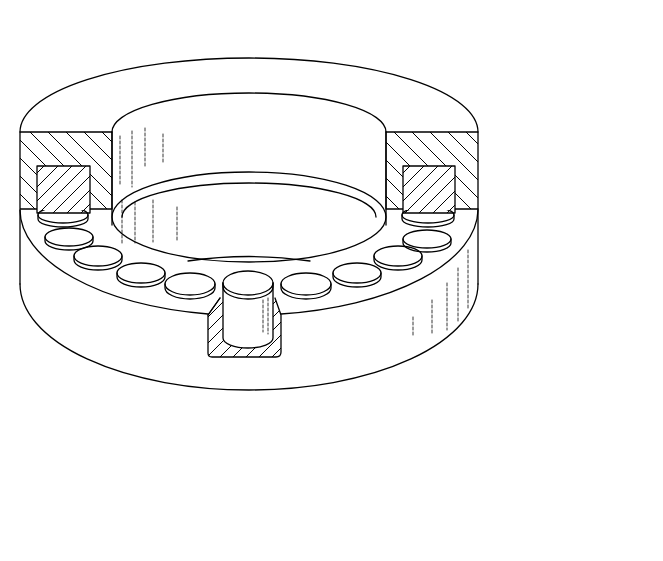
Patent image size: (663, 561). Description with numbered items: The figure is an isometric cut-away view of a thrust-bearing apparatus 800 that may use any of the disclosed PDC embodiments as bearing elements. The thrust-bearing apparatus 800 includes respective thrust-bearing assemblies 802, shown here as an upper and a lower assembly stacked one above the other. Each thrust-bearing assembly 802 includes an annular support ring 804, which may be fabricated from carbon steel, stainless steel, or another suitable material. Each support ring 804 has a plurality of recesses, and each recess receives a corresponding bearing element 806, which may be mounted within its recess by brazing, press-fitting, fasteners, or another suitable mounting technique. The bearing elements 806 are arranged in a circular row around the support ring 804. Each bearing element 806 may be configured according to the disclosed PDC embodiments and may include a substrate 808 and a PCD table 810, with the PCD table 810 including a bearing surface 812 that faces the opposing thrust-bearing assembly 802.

The thrust-bearing apparatus 800 is at (457, 58).
The thrust-bearing assembly 802 is at (505, 191).
The annular support ring 804 is at (457, 160).
The bearing element 806 is at (234, 345).
The substrate 808 is at (250, 322).
The PCD table 810 is at (220, 298).
The bearing surface 812 is at (217, 287).